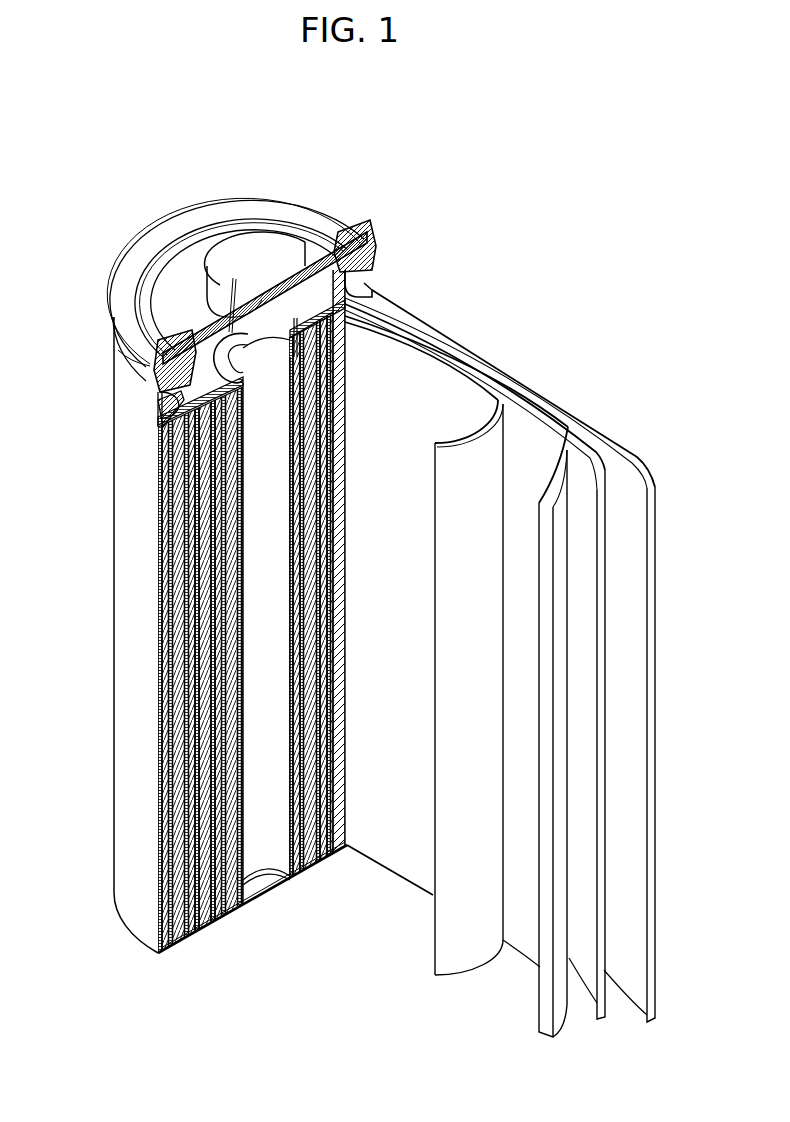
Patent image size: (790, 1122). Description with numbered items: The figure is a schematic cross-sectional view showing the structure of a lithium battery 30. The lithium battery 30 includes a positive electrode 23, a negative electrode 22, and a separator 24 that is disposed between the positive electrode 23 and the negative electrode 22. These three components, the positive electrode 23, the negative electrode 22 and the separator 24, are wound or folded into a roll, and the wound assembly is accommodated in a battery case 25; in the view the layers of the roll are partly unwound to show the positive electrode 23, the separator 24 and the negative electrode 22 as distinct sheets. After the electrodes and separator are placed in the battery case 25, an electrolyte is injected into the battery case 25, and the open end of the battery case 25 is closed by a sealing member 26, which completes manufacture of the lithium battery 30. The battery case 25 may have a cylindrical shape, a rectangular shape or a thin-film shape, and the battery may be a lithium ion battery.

The lithium battery 30 is at (370, 136).
The battery case 25 is at (130, 626).
The sealing member 26 is at (250, 247).
The positive electrode 23 is at (527, 420).
The separator 24 is at (578, 432).
The negative electrode 22 is at (637, 458).